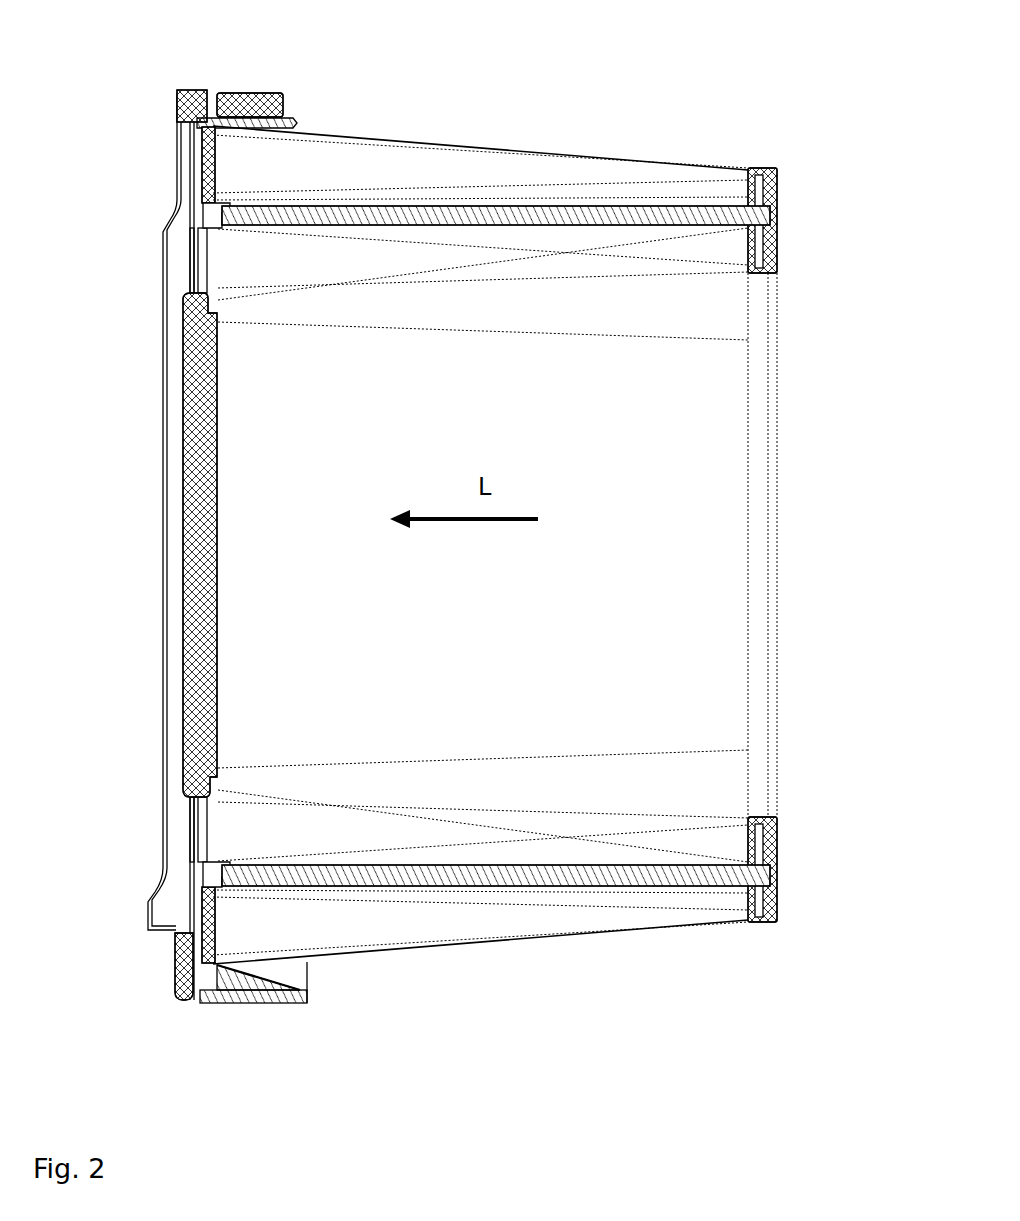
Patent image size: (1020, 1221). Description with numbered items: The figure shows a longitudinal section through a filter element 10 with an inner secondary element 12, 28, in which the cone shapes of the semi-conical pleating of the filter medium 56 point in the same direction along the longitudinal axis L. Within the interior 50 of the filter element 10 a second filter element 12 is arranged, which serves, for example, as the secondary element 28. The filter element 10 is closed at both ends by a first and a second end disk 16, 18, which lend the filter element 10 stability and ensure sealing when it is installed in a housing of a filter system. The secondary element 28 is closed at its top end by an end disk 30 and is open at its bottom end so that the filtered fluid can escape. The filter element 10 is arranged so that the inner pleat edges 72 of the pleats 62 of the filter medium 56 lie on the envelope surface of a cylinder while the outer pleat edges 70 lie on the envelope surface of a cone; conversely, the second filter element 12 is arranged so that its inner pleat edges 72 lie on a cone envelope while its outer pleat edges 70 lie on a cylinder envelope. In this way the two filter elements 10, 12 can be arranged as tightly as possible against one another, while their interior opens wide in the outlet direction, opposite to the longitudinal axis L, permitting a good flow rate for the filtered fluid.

The filter element 10 is at (483, 167).
The second filter element 12 is at (486, 487).
The secondary element 28 is at (555, 243).
The first end disk 16 is at (787, 188).
The second end disk 18 is at (203, 181).
The end disk 30 is at (182, 327).
The interior 50 is at (628, 458).
The filter medium 56 is at (580, 835).
The pleats 62 is at (512, 866).
The outer pleat edges 70 is at (408, 878).
The inner pleat edges 72 is at (672, 880).